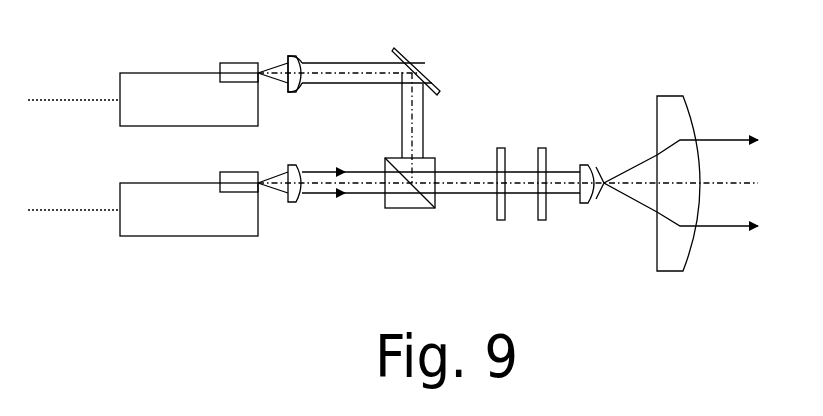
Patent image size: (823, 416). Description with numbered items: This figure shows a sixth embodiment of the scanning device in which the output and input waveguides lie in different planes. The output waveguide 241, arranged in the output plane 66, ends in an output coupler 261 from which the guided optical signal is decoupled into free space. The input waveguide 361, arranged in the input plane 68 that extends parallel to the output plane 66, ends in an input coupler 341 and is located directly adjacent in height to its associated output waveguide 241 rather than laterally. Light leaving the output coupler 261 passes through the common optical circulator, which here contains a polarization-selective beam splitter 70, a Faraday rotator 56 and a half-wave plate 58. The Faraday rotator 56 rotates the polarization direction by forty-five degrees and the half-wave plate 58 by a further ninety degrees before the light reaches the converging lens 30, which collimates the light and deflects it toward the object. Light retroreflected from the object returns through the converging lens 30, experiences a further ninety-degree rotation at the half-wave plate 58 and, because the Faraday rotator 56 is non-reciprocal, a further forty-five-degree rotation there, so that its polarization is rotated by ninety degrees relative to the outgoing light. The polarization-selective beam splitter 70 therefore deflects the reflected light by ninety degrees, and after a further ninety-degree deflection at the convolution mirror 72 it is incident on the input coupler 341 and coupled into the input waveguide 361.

The input waveguide 361 is at (124, 82).
The input coupler 341 is at (237, 72).
The input plane 68 is at (42, 101).
The output waveguide 241 is at (124, 192).
The output coupler 261 is at (247, 180).
The output plane 66 is at (42, 211).
The convolution mirror 72 is at (425, 63).
The polarization-selective beam splitter 70 is at (436, 162).
The Faraday rotator 56 is at (501, 152).
The half-wave plate 58 is at (542, 152).
The converging lens 30 is at (669, 100).